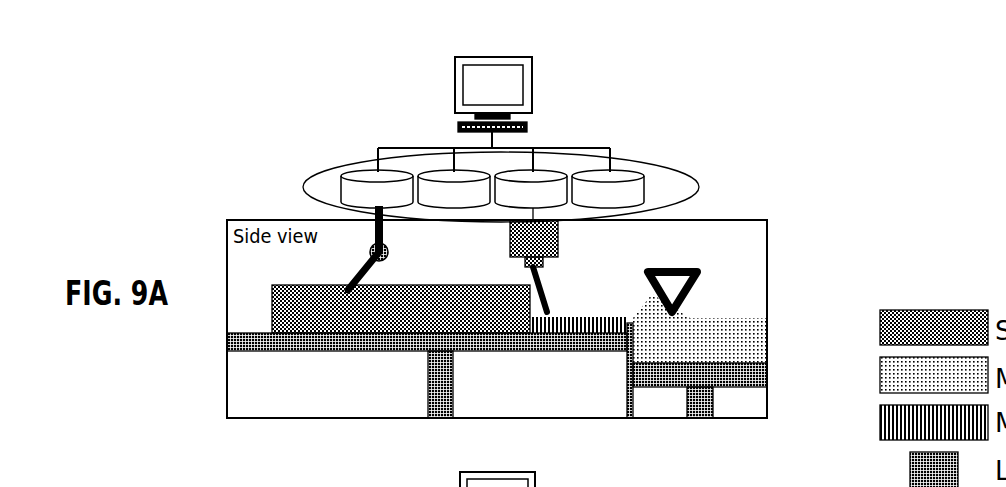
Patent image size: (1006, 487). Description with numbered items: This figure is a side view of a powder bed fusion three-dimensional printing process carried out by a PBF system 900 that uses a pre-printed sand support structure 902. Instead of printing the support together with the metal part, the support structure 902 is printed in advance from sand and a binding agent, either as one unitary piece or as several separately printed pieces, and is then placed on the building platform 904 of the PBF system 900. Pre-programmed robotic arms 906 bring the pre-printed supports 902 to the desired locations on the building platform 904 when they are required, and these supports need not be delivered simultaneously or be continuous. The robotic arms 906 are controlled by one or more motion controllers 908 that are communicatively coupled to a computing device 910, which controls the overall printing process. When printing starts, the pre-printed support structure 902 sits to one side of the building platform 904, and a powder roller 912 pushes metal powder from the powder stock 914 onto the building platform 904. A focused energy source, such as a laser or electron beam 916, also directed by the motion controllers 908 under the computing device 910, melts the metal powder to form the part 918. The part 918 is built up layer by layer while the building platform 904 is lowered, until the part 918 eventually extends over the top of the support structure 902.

The PBF system 900 is at (263, 390).
The pre-printed sand support structure 902 is at (300, 310).
The building platform 904 is at (427, 411).
The robotic arms 906 is at (388, 230).
The motion controllers 908 is at (305, 184).
The computing device 910 is at (455, 78).
The powder roller 912 is at (683, 268).
The powder stock 914 is at (678, 347).
The laser or electron beam 916 is at (560, 250).
The part 918 is at (575, 333).